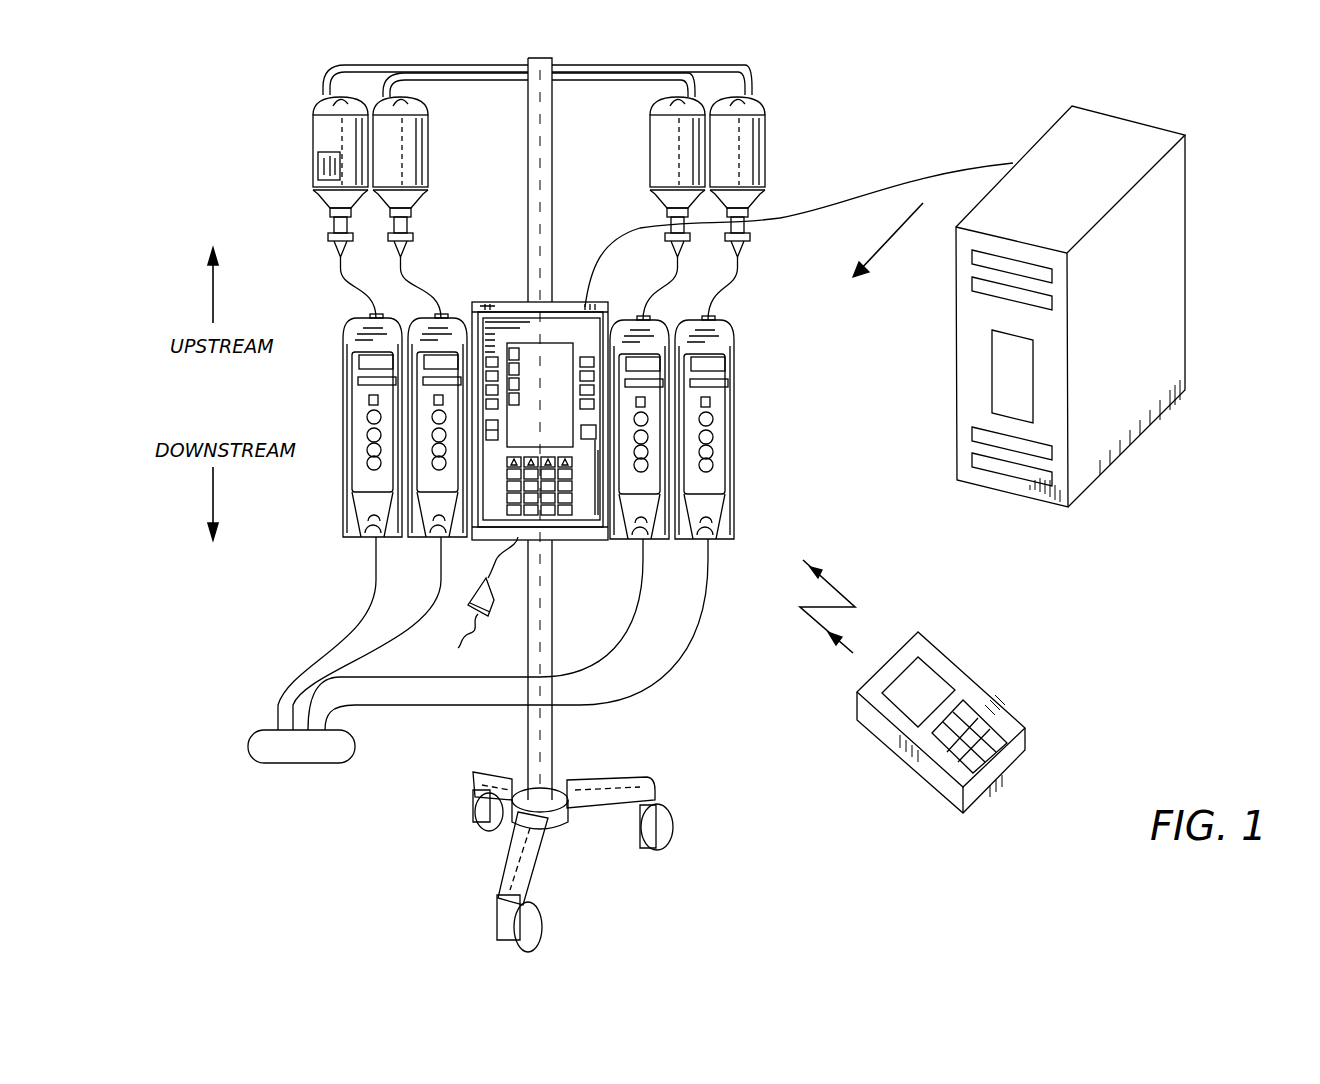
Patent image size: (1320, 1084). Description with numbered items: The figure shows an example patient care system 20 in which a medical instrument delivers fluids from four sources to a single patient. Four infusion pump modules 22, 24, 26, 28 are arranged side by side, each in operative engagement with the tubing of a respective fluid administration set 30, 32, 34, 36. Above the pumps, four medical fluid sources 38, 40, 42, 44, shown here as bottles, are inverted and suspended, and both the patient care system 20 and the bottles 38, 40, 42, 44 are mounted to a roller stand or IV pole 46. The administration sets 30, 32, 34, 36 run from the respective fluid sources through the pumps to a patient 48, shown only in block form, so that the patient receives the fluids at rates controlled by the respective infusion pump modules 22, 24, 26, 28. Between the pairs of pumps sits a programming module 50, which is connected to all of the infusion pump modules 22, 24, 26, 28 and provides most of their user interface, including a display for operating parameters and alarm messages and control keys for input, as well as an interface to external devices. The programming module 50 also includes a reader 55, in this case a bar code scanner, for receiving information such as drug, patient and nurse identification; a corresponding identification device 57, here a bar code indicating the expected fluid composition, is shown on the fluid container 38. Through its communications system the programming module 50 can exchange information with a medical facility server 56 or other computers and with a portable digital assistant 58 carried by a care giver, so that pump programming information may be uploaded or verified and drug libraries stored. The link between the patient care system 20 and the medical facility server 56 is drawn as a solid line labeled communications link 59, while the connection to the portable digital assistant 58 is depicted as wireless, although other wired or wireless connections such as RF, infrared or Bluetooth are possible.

The patient care system 20 is at (897, 232).
The infusion pump module 22 is at (358, 320).
The infusion pump module 24 is at (420, 320).
The infusion pump module 26 is at (618, 318).
The infusion pump module 28 is at (722, 322).
The fluid administration set 30 is at (338, 272).
The fluid administration set 32 is at (435, 290).
The fluid administration set 34 is at (678, 262).
The fluid administration set 36 is at (747, 272).
The medical fluid source 38 is at (315, 132).
The medical fluid source 40 is at (428, 148).
The medical fluid source 42 is at (650, 147).
The medical fluid source 44 is at (767, 145).
The IV pole 46 is at (553, 752).
The patient 48 is at (248, 746).
The programming module 50 is at (515, 302).
The reader 55 is at (481, 601).
The medical facility server 56 is at (1127, 448).
The identification device 57 is at (320, 168).
The portable digital assistant 58 is at (900, 748).
The communications link 59 is at (912, 158).